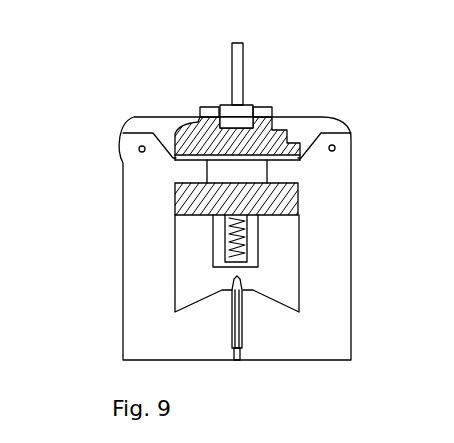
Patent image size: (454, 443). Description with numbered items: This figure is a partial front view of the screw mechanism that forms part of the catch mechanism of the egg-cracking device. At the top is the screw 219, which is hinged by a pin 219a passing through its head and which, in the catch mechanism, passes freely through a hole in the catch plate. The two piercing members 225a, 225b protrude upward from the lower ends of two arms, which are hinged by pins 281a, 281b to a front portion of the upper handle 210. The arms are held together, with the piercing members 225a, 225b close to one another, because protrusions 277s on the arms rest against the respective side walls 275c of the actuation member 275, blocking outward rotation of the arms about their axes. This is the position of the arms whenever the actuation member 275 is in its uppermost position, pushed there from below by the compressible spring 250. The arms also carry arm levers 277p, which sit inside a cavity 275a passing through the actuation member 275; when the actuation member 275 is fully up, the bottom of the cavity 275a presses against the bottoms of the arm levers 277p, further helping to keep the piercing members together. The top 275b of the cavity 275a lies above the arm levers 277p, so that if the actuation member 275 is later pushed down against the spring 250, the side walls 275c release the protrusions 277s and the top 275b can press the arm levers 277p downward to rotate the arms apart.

The upper handle 210 is at (287, 128).
The screw 219 is at (244, 64).
The pin 219a is at (207, 107).
The piercing member 225a is at (231, 308).
The piercing member 225b is at (243, 308).
The compressible spring 250 is at (240, 250).
The actuation member 275 is at (262, 208).
The cavity 275a is at (177, 210).
The top of the cavity 275b is at (231, 163).
The side walls 275c is at (197, 128).
The arm levers 277p is at (200, 172).
The protrusions 277s is at (172, 128).
The pin 281a is at (140, 146).
The pin 281b is at (330, 145).